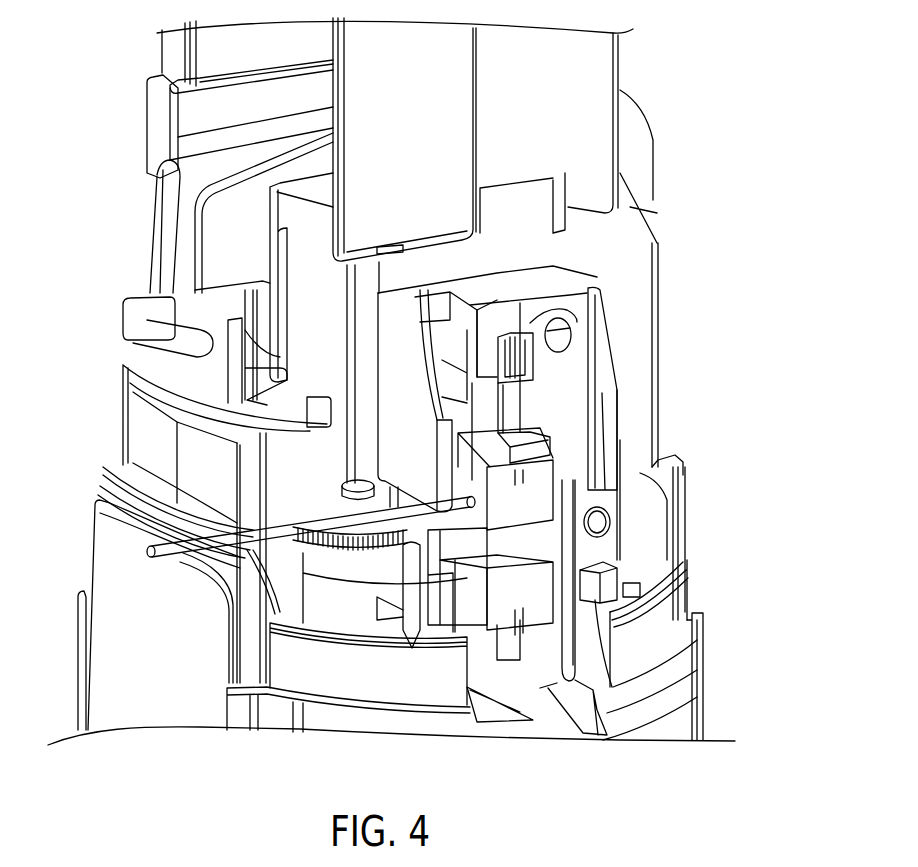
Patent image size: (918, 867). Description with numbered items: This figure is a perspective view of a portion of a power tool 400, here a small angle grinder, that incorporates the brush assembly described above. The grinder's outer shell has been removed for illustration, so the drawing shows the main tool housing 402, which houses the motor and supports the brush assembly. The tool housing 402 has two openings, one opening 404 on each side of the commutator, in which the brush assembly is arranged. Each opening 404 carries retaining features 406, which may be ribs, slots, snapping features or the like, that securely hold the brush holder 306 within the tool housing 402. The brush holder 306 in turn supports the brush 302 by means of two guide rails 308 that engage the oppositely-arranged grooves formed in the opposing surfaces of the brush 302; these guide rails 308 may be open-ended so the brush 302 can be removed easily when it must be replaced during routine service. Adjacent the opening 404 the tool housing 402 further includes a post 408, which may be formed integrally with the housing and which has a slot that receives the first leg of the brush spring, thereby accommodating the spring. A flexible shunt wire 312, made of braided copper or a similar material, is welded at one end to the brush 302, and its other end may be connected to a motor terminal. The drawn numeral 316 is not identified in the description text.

The power tool 400 is at (104, 121).
The tool housing 402 is at (634, 136).
The opening 404 is at (471, 290).
The retaining features 406 is at (520, 337).
The guide rails 308 is at (526, 451).
The brush 302 is at (540, 490).
The post 408 is at (325, 493).
The shunt wire 312 is at (167, 571).
The spring 316 is at (322, 581).
The brush holder 306 is at (535, 668).